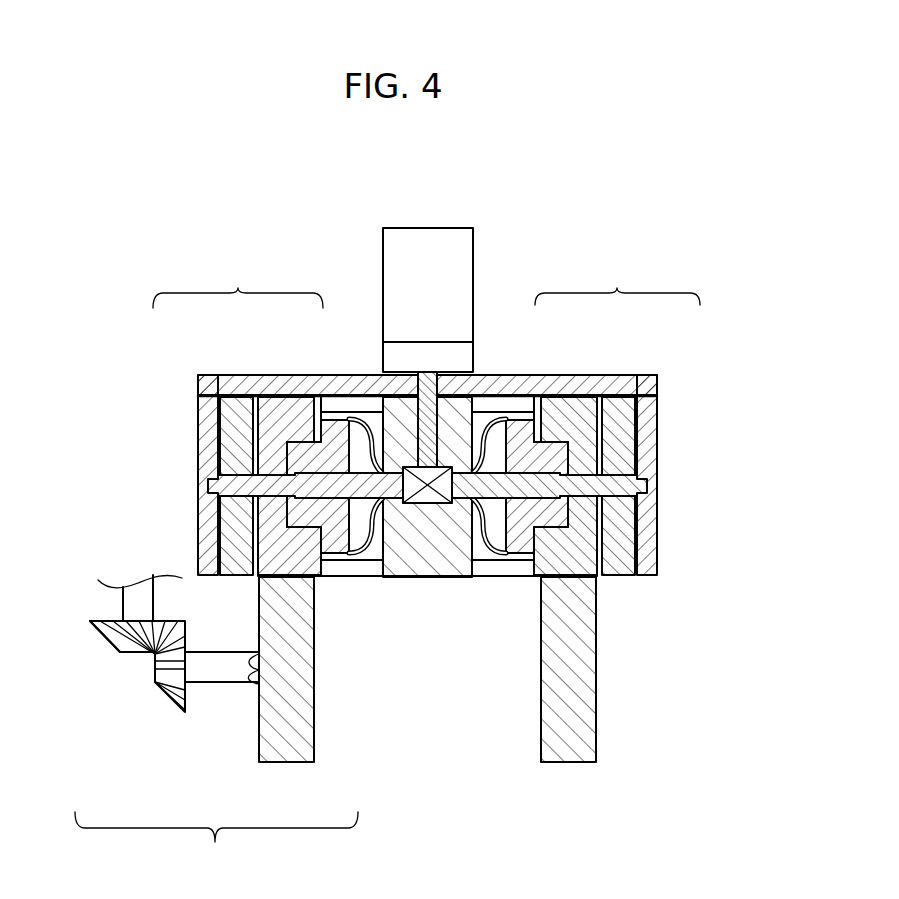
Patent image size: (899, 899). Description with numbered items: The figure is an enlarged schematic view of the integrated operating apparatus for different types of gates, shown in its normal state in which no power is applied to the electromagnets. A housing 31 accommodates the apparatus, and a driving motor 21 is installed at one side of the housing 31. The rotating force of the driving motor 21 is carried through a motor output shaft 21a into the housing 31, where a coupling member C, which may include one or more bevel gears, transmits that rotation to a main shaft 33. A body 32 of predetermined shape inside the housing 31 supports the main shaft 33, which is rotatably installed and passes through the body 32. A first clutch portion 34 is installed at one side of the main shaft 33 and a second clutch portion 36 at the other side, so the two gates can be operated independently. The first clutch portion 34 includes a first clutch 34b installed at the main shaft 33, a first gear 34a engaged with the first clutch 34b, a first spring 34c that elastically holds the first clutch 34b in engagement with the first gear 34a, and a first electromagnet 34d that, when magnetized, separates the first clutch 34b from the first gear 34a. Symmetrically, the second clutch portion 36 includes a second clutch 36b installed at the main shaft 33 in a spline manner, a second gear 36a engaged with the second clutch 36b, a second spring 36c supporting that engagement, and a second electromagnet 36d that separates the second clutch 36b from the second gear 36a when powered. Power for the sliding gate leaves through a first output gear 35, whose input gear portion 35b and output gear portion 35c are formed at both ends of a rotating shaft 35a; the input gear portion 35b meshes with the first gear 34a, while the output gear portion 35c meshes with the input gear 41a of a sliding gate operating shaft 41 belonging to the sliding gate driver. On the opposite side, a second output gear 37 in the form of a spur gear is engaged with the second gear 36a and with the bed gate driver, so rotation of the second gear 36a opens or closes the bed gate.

The driving motor 21 is at (425, 257).
The motor output shaft 21a is at (418, 420).
The housing 31 is at (657, 442).
The body 32 is at (450, 505).
The main shaft 33 is at (523, 482).
The first clutch portion 34 is at (238, 281).
The first gear 34a is at (275, 415).
The first clutch 34b is at (337, 427).
The first spring 34c is at (363, 445).
The first electromagnet 34d is at (235, 412).
The first output gear 35 is at (216, 843).
The rotating shaft 35a is at (208, 677).
The input gear portion 35b is at (313, 758).
The output gear portion 35c is at (152, 683).
The second clutch portion 36 is at (617, 279).
The second gear 36a is at (577, 413).
The second clutch 36b is at (520, 425).
The second spring 36c is at (492, 420).
The second electromagnet 36d is at (620, 412).
The second output gear 37 is at (573, 707).
The sliding gate operating shaft 41 is at (123, 598).
The input gear 41a is at (105, 637).
The coupling member C is at (425, 493).